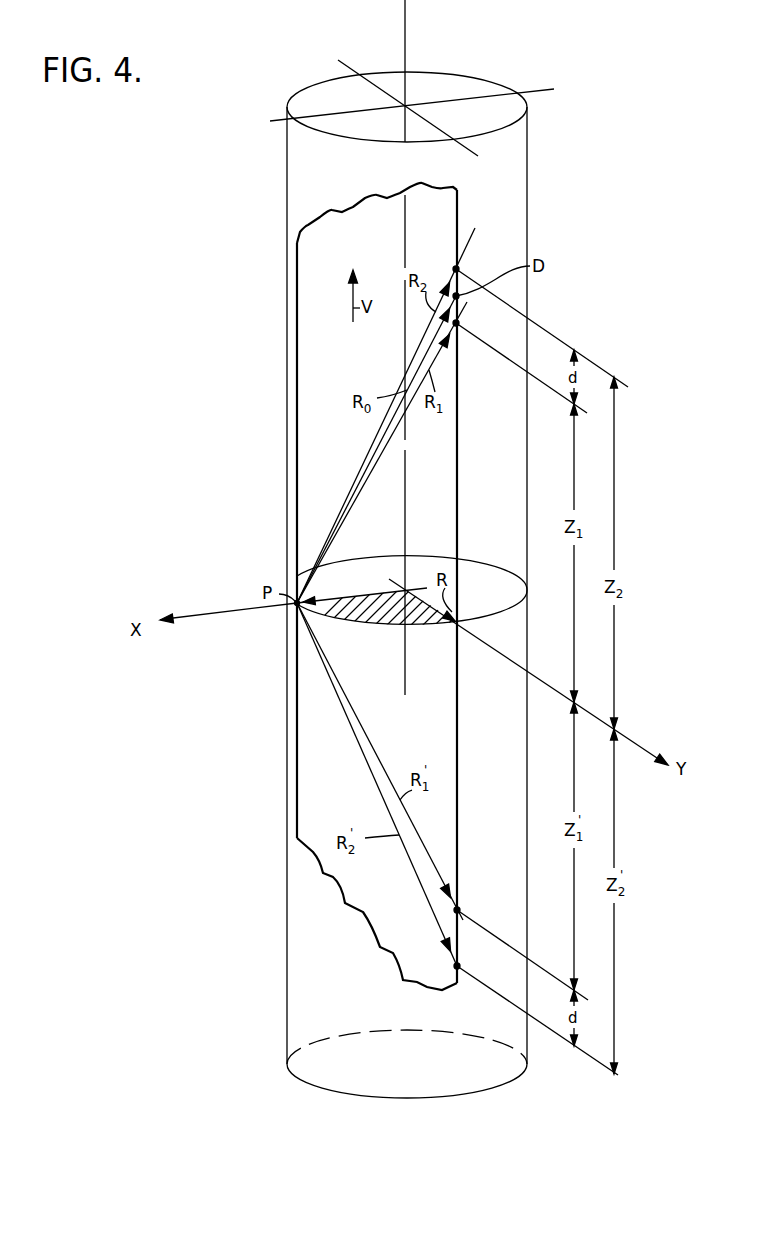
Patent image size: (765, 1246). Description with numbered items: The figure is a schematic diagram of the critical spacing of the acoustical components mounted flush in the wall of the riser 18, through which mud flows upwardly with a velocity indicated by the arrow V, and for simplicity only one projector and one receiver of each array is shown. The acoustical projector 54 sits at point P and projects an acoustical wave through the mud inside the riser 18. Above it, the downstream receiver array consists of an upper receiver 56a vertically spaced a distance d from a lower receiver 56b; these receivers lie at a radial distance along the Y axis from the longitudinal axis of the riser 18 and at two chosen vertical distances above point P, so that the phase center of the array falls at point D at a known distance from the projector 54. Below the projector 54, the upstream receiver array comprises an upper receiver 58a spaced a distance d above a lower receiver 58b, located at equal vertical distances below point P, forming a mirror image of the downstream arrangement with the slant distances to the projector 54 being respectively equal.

The riser 18 is at (287, 182).
The acoustical projector 54 is at (296, 607).
The upper receiver of downstream receiver array 56a is at (456, 269).
The lower receiver of downstream receiver array 56b is at (456, 323).
The upper receiver of upstream receiver array 58a is at (460, 910).
The lower receiver of upstream receiver array 58b is at (457, 966).